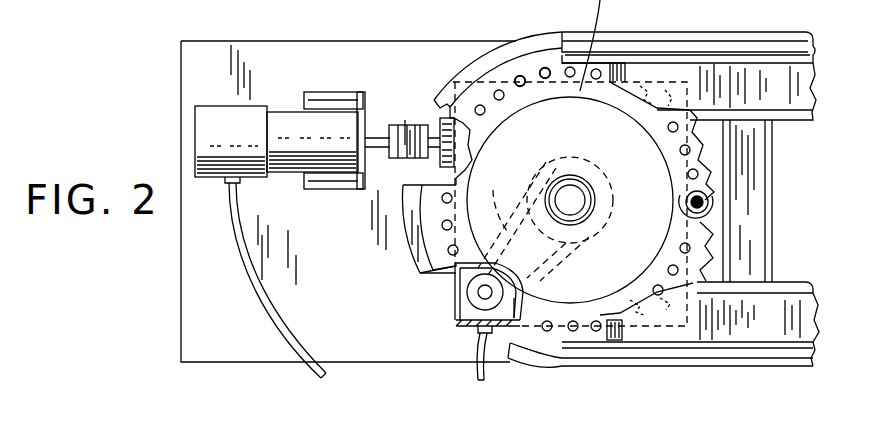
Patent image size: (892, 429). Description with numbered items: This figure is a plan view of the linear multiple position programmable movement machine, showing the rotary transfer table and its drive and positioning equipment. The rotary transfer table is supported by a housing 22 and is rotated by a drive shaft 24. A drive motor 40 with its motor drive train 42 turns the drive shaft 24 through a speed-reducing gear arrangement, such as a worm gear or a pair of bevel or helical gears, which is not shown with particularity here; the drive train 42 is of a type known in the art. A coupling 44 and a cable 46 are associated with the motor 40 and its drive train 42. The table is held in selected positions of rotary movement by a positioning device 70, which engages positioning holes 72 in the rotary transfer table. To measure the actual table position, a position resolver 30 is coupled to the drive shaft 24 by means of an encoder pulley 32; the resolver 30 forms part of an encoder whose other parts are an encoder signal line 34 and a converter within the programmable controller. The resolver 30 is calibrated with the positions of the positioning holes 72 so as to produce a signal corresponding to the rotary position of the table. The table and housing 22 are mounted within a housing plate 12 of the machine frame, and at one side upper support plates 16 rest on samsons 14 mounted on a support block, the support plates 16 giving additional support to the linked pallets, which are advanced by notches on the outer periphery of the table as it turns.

The housing plate 12 is at (743, 87).
The samsons 14 is at (752, 202).
The support plates 16 is at (760, 327).
The housing 22 is at (452, 314).
The drive shaft 24 is at (571, 200).
The position resolver 30 is at (472, 297).
The encoder pulley 32 is at (545, 219).
The encoder signal line 34 is at (489, 368).
The drive motor 40 is at (214, 135).
The motor drive train 42 is at (391, 115).
The coupling 44 is at (363, 168).
The cable 46 is at (262, 296).
The positioning device 70 is at (705, 210).
The positioning holes 72 is at (544, 70).